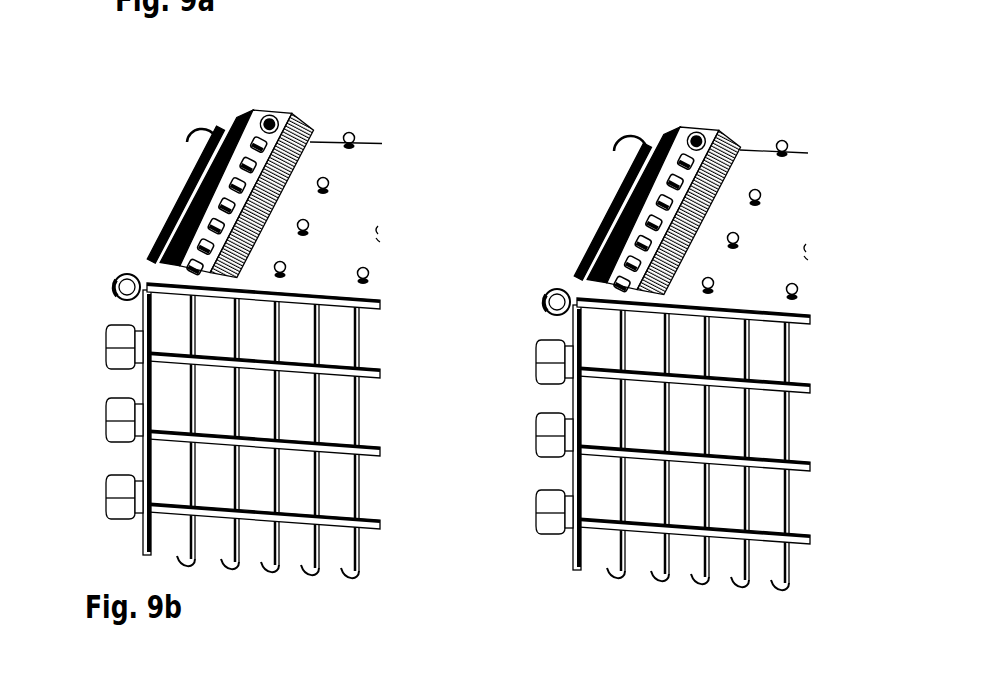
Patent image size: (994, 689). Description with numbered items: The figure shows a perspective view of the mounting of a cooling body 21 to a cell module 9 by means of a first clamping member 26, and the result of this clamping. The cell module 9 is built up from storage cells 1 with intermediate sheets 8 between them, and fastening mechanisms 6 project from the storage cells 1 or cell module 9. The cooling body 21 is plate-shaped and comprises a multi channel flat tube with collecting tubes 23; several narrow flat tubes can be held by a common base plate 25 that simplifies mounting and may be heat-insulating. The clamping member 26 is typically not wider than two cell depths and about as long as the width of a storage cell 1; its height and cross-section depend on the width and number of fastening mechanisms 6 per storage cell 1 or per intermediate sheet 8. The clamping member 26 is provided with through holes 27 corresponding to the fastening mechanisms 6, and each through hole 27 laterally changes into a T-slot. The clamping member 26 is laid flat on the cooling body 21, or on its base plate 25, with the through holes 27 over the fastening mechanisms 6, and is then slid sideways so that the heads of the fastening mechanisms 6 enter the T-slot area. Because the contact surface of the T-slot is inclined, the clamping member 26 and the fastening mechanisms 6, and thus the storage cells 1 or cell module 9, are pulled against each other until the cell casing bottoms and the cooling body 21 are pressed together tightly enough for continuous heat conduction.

The storage cell 1 is at (643, 398).
The fastening mechanism 6 is at (687, 143).
The intermediate sheet 8 is at (705, 488).
The cell module 9 is at (478, 256).
The cooling body 21 is at (451, 167).
The collecting tube 23 is at (359, 141).
The base plate 25 is at (320, 154).
The clamping member 26 is at (197, 167).
The through hole 27 is at (272, 118).